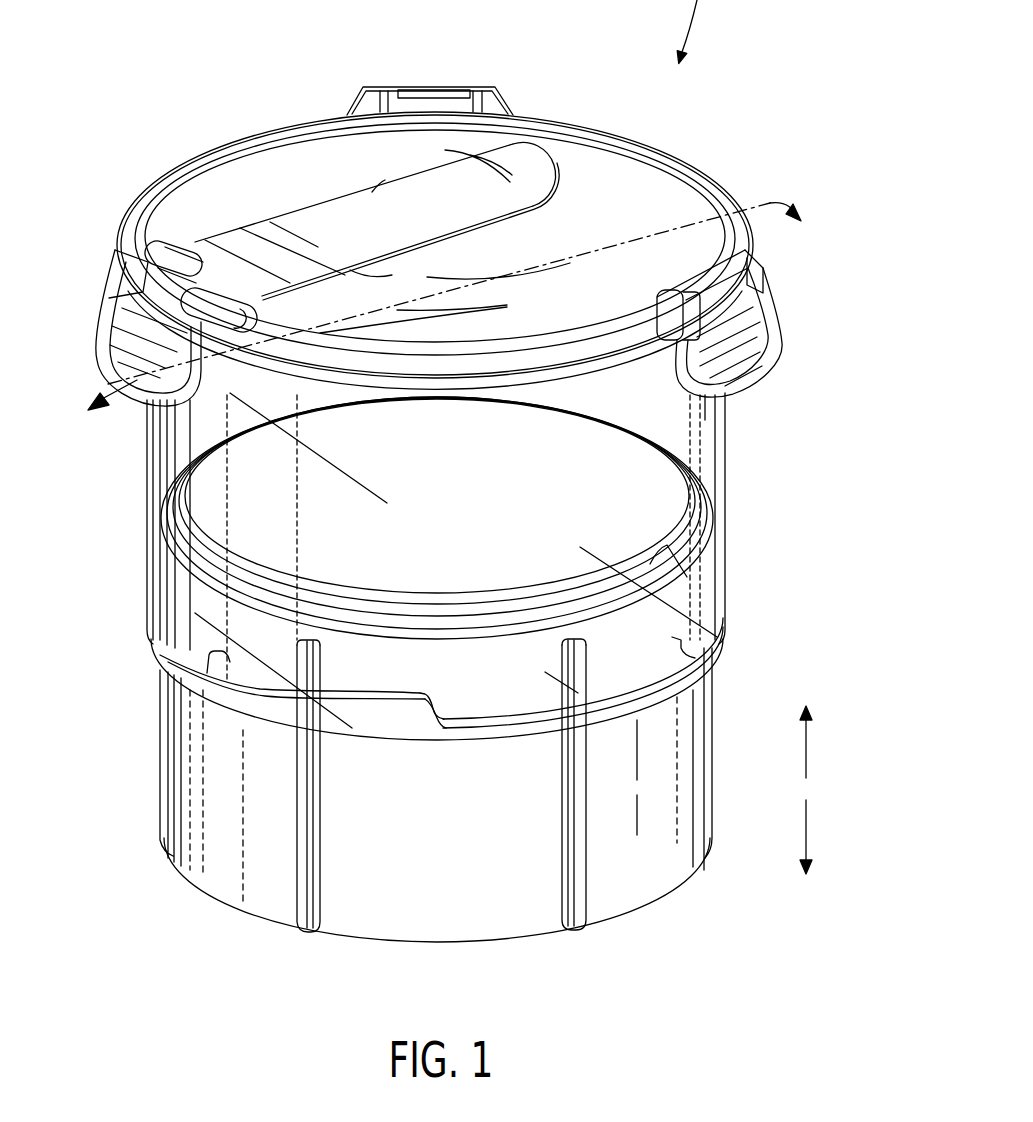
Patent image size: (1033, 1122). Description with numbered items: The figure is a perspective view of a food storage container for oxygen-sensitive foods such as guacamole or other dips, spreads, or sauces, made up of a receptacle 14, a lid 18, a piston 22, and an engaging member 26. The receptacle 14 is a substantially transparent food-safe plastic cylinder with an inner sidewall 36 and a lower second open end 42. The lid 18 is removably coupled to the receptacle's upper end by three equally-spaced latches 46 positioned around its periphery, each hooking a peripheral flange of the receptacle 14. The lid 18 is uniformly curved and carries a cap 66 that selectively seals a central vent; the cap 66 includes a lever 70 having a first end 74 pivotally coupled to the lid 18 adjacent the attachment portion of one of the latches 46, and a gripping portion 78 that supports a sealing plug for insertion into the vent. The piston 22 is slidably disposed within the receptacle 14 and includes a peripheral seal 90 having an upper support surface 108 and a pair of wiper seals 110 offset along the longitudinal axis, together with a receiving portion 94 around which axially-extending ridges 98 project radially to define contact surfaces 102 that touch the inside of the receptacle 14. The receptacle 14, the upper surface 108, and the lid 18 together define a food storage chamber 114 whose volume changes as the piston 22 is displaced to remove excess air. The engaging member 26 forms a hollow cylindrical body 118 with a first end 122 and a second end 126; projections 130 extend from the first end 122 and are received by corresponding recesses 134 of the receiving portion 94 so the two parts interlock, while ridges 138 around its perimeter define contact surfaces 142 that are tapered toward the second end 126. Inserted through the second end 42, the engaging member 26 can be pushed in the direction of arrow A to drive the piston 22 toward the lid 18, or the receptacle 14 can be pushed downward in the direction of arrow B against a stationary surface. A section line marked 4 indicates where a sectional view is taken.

The receptacle 14 is at (726, 434).
The lid 18 is at (676, 188).
The piston 22 is at (668, 634).
The engaging member 26 is at (348, 925).
The inner sidewall 36 is at (710, 420).
The second open end 42 is at (495, 740).
The latches 46 is at (424, 86).
The cap 66 is at (377, 187).
The lever 70 is at (323, 203).
The first end 74 is at (203, 253).
The gripping portion 78 is at (522, 165).
The peripheral seal 90 is at (725, 524).
The receiving portion 94 is at (404, 722).
The ridges 98 is at (318, 673).
The contact surfaces 102 is at (303, 662).
The upper support surface 108 is at (436, 525).
The wiper seals 110 is at (687, 577).
The food storage chamber 114 is at (232, 446).
The hollow cylindrical body 118 is at (527, 925).
The first end 122 is at (418, 748).
The second end 126 is at (633, 922).
The projections 130 is at (258, 700).
The recesses 134 is at (253, 667).
The ridges 138 is at (317, 857).
The contact surfaces 142 is at (304, 800).
The section line 4- 4 is at (453, 317).
The arrow A is at (808, 756).
The arrow B is at (808, 836).